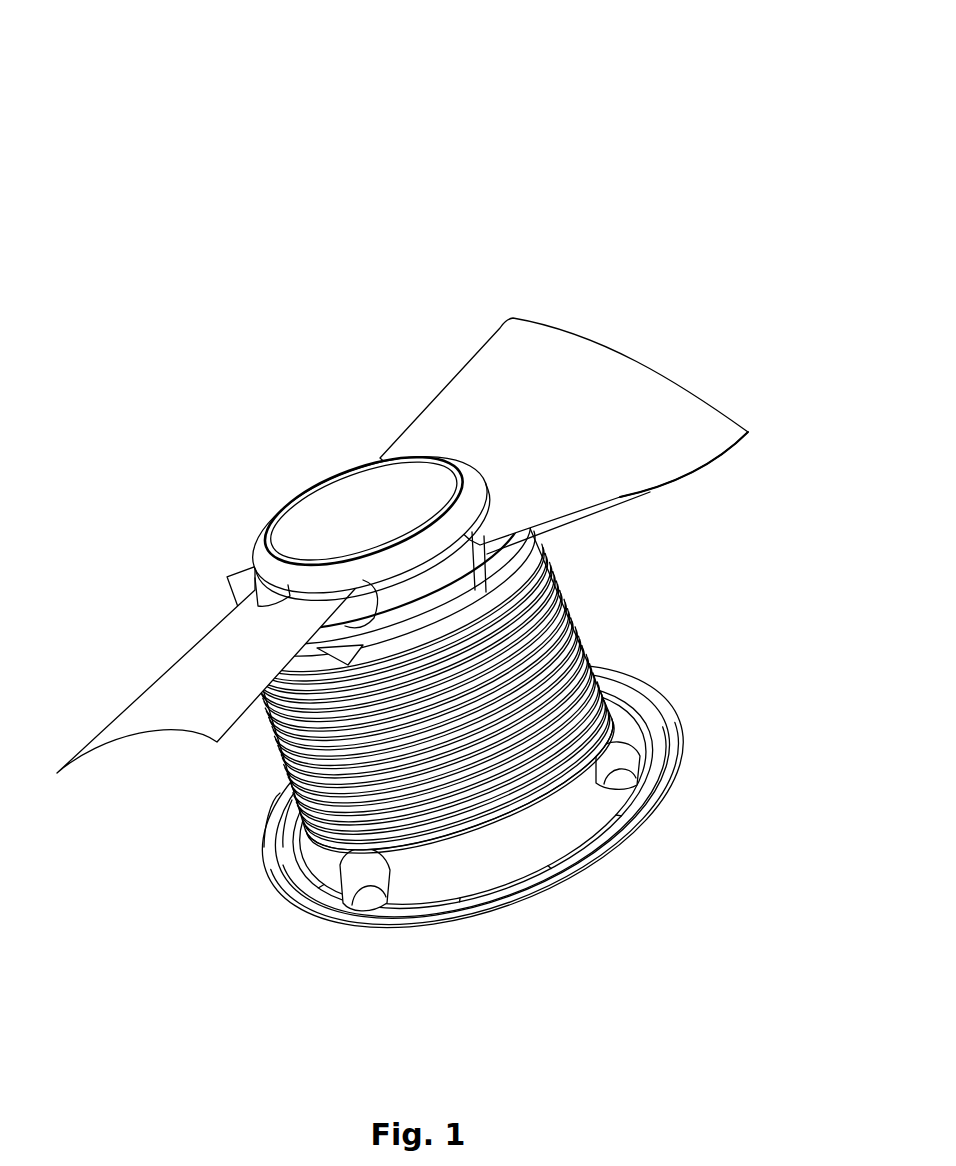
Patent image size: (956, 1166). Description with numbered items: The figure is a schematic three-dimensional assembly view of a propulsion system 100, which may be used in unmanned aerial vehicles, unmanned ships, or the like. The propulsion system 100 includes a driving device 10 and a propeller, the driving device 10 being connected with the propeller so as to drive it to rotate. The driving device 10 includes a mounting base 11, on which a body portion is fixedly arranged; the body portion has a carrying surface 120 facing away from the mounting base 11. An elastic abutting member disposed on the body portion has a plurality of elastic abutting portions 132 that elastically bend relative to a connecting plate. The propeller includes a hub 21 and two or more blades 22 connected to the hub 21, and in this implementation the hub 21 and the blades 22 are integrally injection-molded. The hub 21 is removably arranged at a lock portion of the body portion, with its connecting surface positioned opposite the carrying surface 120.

The propulsion system 100 is at (433, 58).
The driving device 10 is at (640, 667).
The mounting base 11 is at (543, 810).
The carrying surface 120 is at (517, 563).
The elastic abutting portions 132 is at (353, 650).
The hub 21 is at (347, 520).
The blades 22 is at (623, 455).